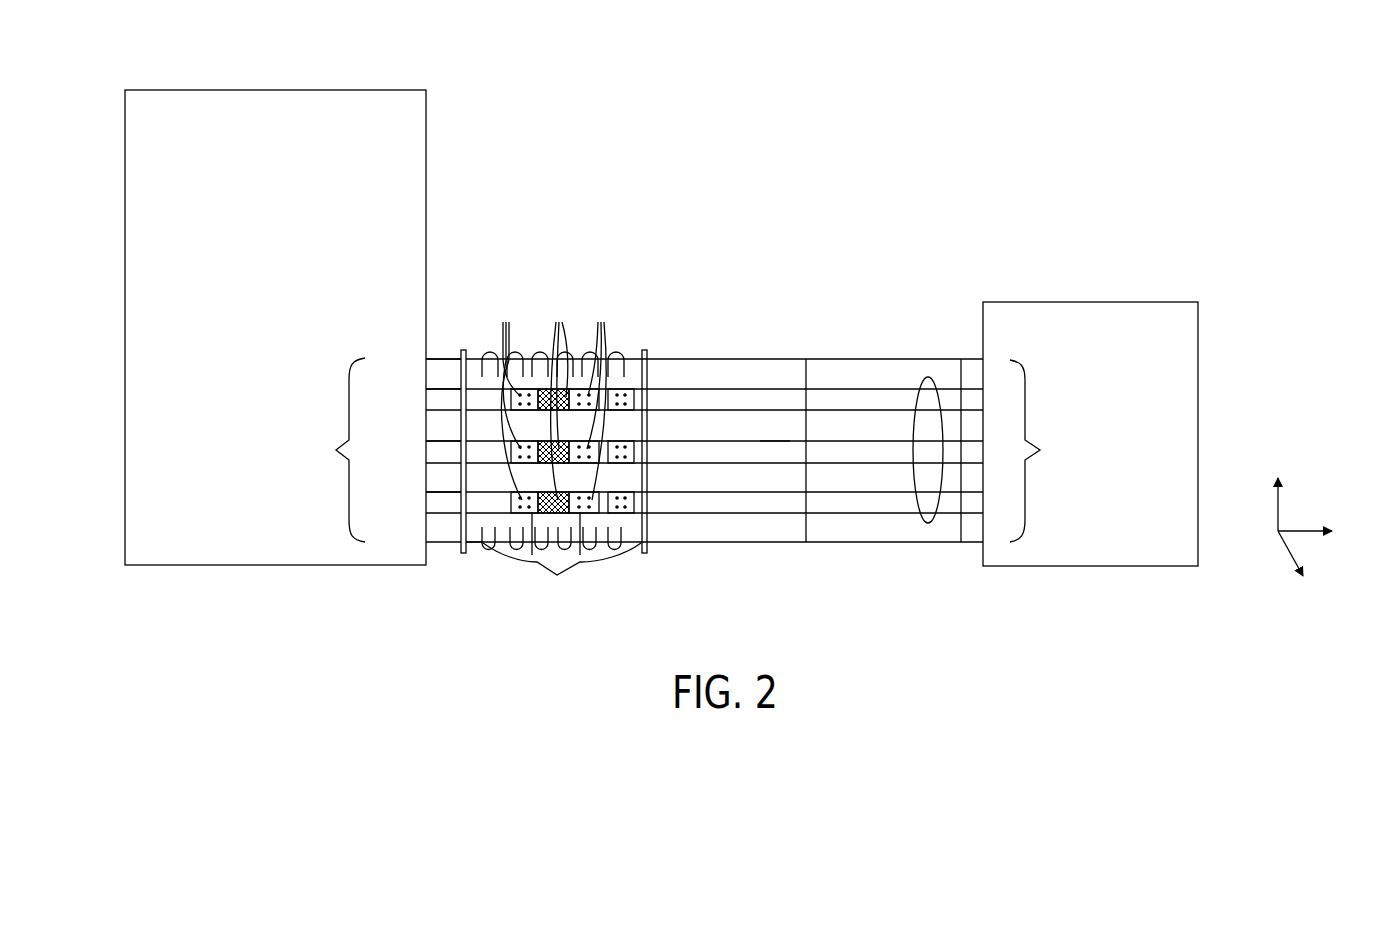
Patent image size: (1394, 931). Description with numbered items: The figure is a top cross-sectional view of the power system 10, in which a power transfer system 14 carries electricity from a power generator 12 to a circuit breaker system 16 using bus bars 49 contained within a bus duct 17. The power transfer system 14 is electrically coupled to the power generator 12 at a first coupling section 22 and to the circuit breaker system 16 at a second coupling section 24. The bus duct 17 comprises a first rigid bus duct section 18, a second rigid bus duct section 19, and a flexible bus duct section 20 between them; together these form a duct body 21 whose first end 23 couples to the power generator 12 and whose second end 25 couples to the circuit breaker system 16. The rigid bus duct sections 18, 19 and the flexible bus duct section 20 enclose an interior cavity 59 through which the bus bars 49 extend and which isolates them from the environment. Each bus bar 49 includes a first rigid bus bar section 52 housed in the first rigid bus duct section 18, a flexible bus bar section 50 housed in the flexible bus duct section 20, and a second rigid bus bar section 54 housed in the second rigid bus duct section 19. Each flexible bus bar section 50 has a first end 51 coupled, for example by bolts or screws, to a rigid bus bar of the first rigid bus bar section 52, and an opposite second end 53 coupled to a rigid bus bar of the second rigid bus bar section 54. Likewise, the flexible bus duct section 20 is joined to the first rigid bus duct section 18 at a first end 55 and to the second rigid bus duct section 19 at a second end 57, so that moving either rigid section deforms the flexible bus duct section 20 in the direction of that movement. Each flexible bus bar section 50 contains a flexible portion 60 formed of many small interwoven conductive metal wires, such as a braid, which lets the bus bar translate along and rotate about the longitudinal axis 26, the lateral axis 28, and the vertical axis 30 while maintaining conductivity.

The power system 10 is at (1083, 78).
The power generator 12 is at (276, 90).
The power transfer system 14 is at (967, 138).
The circuit breaker system 16 is at (1092, 302).
The bus duct 17 is at (863, 597).
The first rigid bus duct section 18 is at (441, 545).
The second rigid bus duct section 19 is at (837, 358).
The flexible bus duct section 20 is at (511, 545).
The duct body 21 is at (843, 560).
The first coupling section 22 is at (380, 450).
The first end 23 is at (425, 390).
The second coupling section 24 is at (1041, 451).
The second end 25 is at (983, 398).
The longitudinal axis 26 is at (1300, 531).
The lateral axis 28 is at (1290, 555).
The vertical axis 30 is at (1278, 505).
The bus bar 49 is at (915, 400).
The flexible bus bar section 50 is at (560, 395).
The first end 51 is at (562, 405).
The first rigid bus bar section 52 is at (425, 403).
The second end 53 is at (602, 398).
The second rigid bus bar section 54 is at (772, 402).
The first end 55 is at (478, 546).
The second end 57 is at (632, 546).
The interior cavity 59 is at (705, 370).
The flexible portion 60 is at (562, 560).